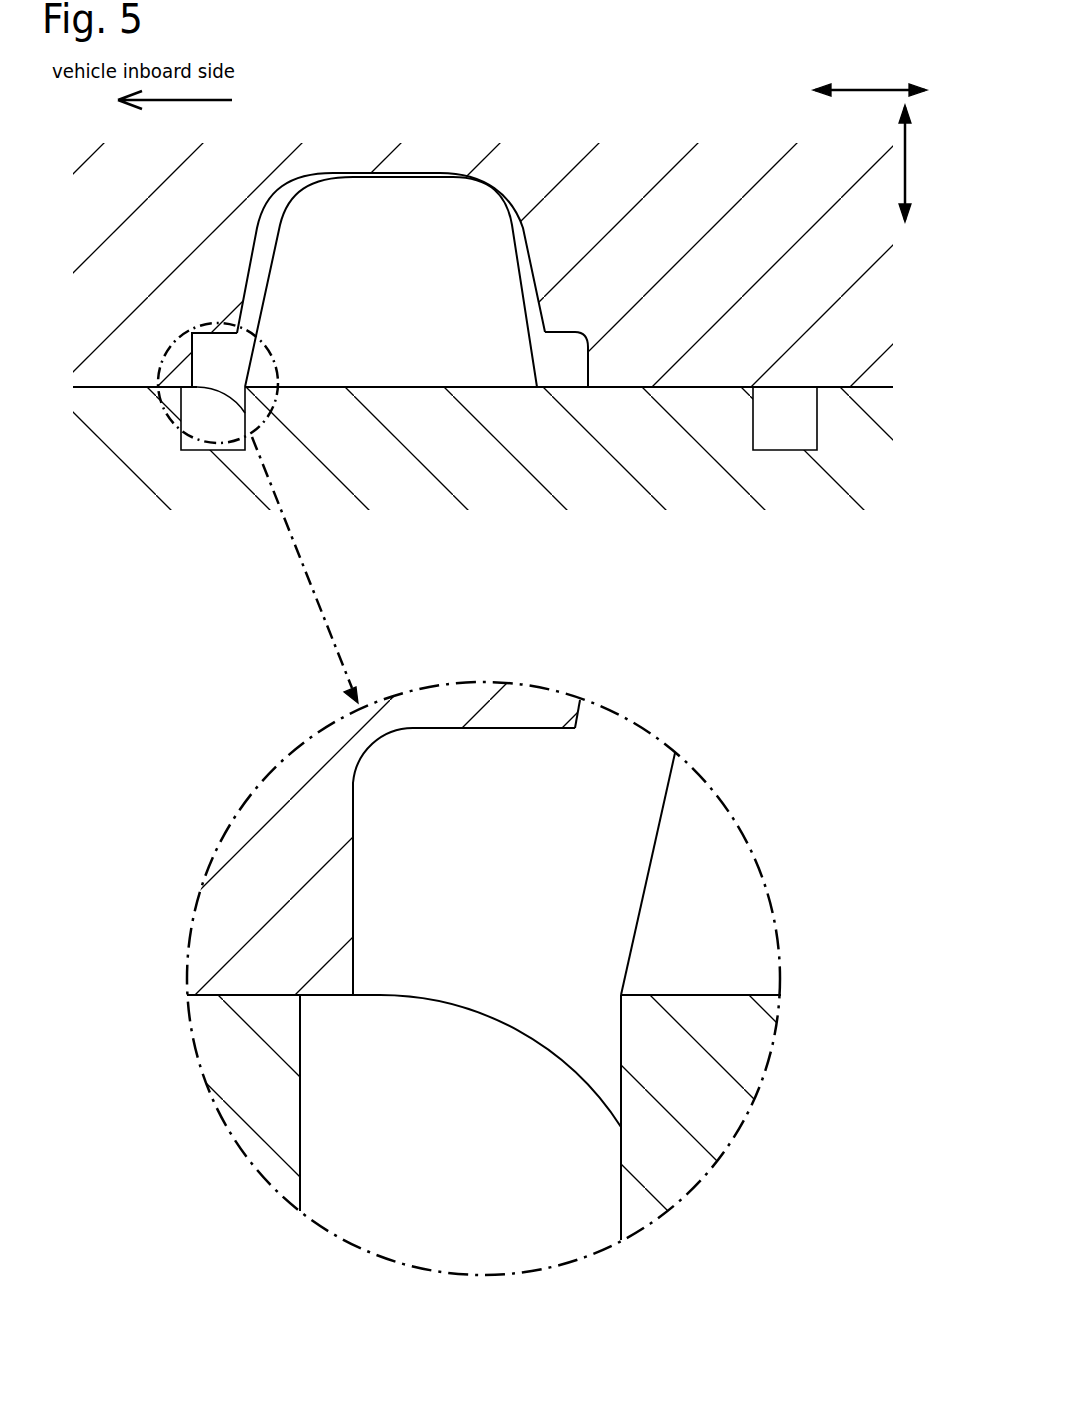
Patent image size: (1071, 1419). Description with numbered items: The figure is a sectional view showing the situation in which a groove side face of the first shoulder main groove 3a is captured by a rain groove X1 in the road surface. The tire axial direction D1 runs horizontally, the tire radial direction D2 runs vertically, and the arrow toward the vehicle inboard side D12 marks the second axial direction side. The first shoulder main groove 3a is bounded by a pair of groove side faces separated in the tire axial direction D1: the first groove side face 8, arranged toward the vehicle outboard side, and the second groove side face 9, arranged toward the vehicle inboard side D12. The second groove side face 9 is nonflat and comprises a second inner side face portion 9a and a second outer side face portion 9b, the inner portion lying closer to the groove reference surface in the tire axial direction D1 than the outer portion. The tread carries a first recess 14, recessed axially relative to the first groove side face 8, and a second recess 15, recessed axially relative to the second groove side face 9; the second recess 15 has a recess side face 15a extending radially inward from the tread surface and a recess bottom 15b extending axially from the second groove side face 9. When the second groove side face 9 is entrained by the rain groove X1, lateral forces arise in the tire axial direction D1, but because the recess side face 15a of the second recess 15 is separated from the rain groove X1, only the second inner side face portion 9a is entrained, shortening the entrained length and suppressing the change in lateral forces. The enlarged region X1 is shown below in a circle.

The first shoulder main groove 3a is at (395, 398).
The first groove side face 8 is at (502, 327).
The second groove side face 9 is at (278, 327).
The second inner side face portion 9a is at (632, 1055).
The second outer side face portion 9b is at (593, 717).
The first recess 14 is at (555, 365).
The second recess 15 is at (385, 664).
The recess side face 15a is at (365, 923).
The recess bottom 15b is at (489, 740).
The rain groove X1 is at (208, 461).
The tire axial direction D1 is at (870, 80).
The tire radial direction D2 is at (917, 163).
The second axial direction side D12 is at (152, 100).